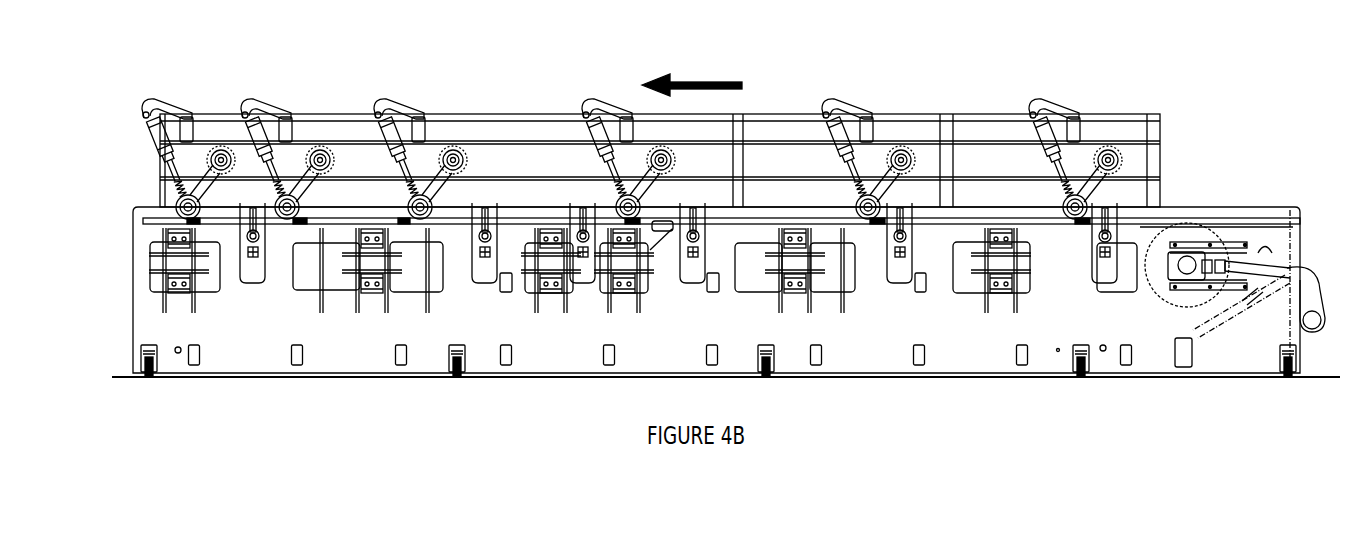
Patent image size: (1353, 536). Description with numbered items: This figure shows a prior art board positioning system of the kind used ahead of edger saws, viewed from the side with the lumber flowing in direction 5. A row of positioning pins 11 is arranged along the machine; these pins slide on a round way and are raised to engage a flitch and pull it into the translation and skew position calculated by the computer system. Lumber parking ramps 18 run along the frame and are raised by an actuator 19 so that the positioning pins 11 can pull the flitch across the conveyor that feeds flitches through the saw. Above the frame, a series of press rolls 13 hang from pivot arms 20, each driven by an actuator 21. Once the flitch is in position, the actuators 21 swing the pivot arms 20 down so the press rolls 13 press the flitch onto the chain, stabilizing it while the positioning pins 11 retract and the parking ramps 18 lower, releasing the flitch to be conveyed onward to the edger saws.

The direction of lumber flow 5 is at (708, 81).
The positioning pins 11 is at (260, 205).
The press rolls 13 is at (175, 193).
The lumber parking ramps 18 is at (338, 222).
The actuator 19 is at (200, 255).
The pivot arms 20 is at (452, 178).
The actuators 21 is at (397, 125).